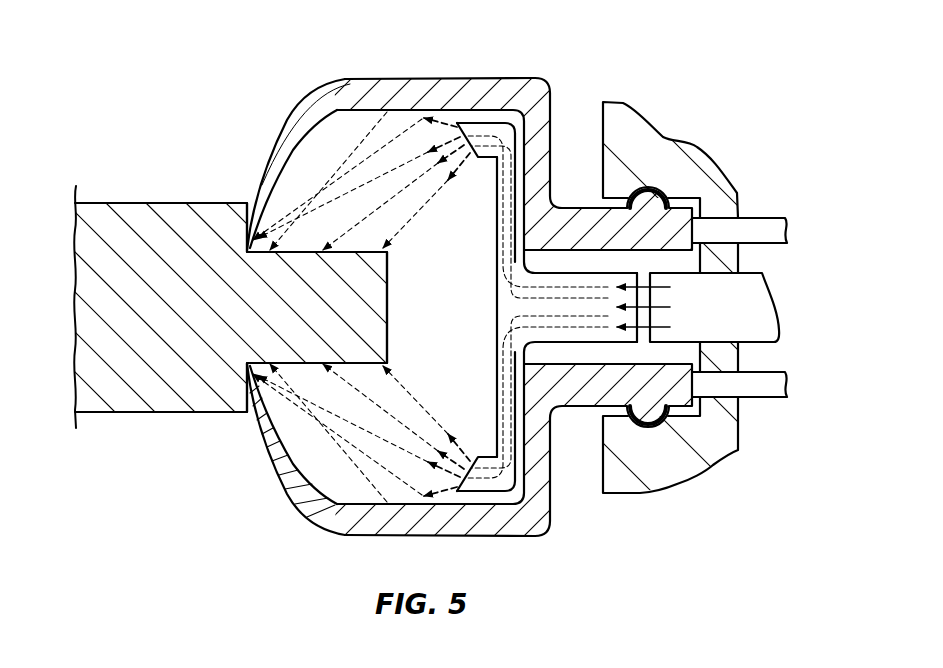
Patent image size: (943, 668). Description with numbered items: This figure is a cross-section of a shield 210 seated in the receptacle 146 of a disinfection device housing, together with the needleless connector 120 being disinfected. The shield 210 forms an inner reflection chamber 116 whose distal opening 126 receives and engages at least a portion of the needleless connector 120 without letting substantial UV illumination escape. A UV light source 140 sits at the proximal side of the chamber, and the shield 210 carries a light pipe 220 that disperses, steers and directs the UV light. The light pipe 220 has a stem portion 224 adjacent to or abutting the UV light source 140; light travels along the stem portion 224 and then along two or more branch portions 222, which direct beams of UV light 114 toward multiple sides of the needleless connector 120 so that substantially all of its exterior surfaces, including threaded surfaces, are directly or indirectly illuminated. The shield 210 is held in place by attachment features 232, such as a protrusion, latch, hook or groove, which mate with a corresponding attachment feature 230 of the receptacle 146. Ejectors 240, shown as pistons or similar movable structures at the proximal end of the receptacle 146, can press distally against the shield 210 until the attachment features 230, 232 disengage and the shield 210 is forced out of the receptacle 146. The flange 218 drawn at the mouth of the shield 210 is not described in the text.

The needleless connector 120 is at (123, 399).
The distal opening 126 is at (258, 210).
The shield 210 is at (397, 78).
The upper flange lip 218 is at (306, 150).
The reflection chamber 116 is at (314, 451).
The receptacle 146 is at (585, 203).
The light pipe 220 is at (496, 310).
The branch portions 222 is at (470, 160).
The stem portion 224 is at (580, 275).
The UV light 114 is at (392, 368).
The UV light source 140 is at (739, 319).
The attachment feature 230 is at (666, 198).
The attachment features 232 is at (668, 190).
The ejectors 240 is at (768, 220).